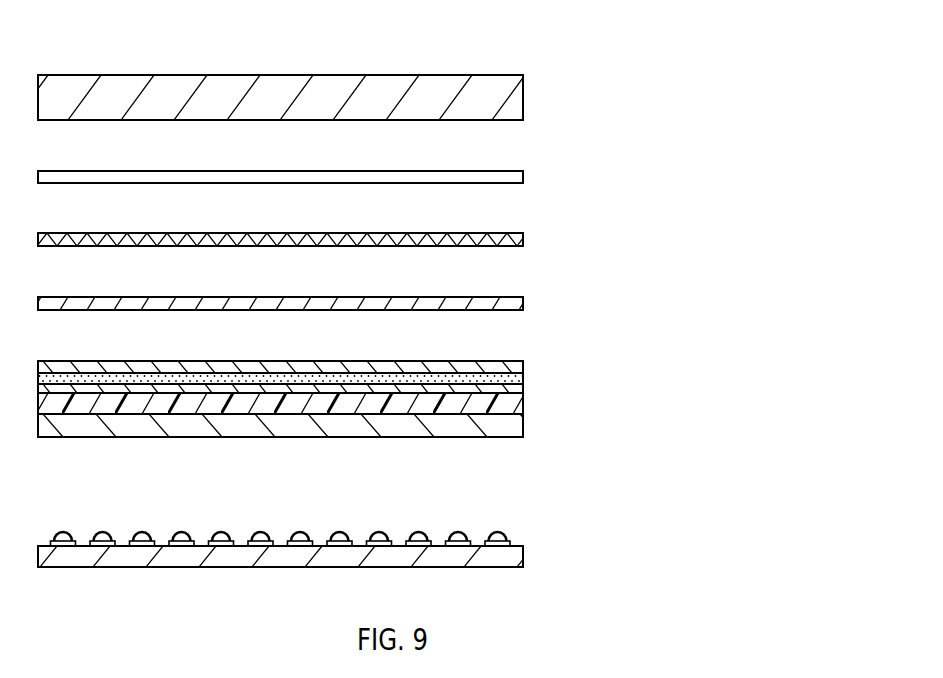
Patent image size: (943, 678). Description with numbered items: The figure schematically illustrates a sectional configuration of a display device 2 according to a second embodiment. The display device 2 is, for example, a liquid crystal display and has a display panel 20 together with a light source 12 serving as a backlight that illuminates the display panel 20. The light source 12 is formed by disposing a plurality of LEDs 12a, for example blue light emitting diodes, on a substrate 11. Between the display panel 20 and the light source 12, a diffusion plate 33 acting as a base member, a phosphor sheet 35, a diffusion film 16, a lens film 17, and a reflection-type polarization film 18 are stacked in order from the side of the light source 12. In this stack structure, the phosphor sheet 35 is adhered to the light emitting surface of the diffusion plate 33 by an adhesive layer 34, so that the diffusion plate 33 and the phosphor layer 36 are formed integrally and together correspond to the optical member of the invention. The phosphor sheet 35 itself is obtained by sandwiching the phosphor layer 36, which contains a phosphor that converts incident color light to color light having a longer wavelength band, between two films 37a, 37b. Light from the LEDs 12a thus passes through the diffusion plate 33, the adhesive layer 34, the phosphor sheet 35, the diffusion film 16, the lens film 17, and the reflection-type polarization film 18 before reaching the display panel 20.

The display device 2 is at (507, 42).
The display panel 20 is at (524, 97).
The reflection-type polarization film 18 is at (524, 177).
The lens film 17 is at (524, 240).
The diffusion film 16 is at (524, 303).
The phosphor sheet 35 is at (337, 372).
The film 37b is at (510, 367).
The phosphor layer 36 is at (517, 378).
The film 37a is at (513, 389).
The adhesive layer 34 is at (513, 403).
The diffusion plate 33 is at (513, 425).
The light source 12 is at (341, 538).
The LEDs 12a is at (513, 532).
The substrate 11 is at (518, 560).